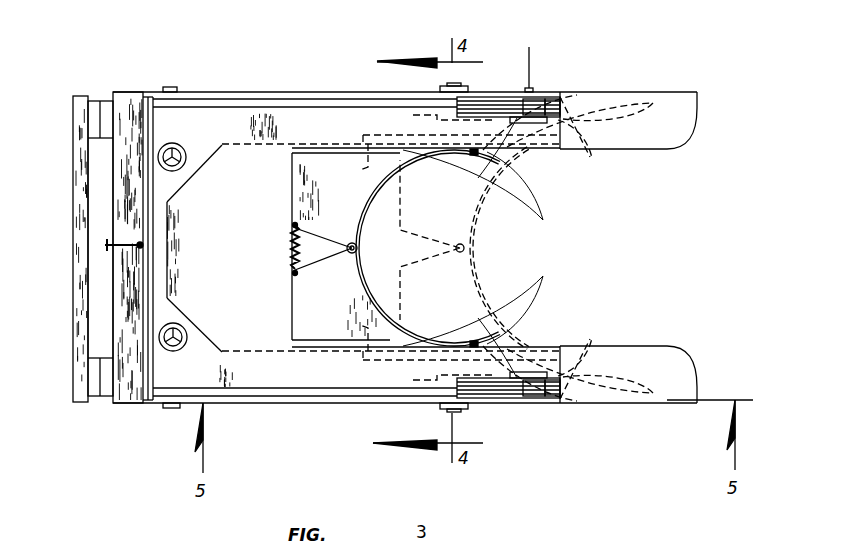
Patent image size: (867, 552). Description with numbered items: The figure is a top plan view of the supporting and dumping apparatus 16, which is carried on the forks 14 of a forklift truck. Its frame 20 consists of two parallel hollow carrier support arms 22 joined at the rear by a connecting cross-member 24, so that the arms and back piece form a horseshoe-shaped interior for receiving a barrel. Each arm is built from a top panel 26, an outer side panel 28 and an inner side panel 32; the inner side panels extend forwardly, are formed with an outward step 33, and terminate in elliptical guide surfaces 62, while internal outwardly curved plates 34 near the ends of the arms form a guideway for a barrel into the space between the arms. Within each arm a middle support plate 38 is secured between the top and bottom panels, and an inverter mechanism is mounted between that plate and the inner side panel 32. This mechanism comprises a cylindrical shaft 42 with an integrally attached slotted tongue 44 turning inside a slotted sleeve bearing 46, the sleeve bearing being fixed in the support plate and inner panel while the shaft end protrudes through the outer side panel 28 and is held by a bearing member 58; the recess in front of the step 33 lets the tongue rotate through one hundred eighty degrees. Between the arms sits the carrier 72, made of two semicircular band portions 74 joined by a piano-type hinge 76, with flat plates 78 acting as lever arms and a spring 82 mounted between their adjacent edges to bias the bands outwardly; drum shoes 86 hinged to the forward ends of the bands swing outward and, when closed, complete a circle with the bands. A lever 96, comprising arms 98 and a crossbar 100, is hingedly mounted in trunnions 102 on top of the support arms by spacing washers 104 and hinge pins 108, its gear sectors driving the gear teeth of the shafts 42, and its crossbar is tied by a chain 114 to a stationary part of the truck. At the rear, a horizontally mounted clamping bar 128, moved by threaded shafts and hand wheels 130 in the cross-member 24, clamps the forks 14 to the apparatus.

The forks 14 is at (106, 101).
The supporting and dumping apparatus 16 is at (618, 91).
The frame 20 is at (268, 90).
The carrier support arms 22 is at (664, 153).
The connecting cross-member 24 is at (113, 203).
The top panel 26 is at (216, 116).
The outer side panels 28 is at (187, 92).
The inner side panels 32 is at (405, 150).
The outward step 33 is at (368, 168).
The internal outwardly curved plates 34 is at (685, 135).
The middle support plate 38 is at (397, 110).
The cylindrical shaft 42 is at (457, 87).
The slotted tongue 44 is at (420, 172).
The sleeve bearing 46 is at (413, 116).
The bearing member 58 is at (440, 87).
The elliptical guide surfaces 62 is at (590, 153).
The carrier 72 is at (381, 198).
The semicircular band portions 74 is at (368, 218).
The piano-type hinge 76 is at (352, 243).
The flat plates 78 is at (290, 187).
The spring 82 is at (290, 253).
The drum shoes 86 is at (644, 97).
The lever 96 is at (305, 91).
The arms 98 is at (293, 108).
The crossbar 100 is at (143, 405).
The trunnions 102 is at (538, 97).
The spacing washers 104 is at (566, 88).
The hinge pins 108 is at (531, 62).
The chain 114 is at (108, 240).
The clamping bar 128 is at (180, 231).
The hand wheels 130 is at (187, 150).